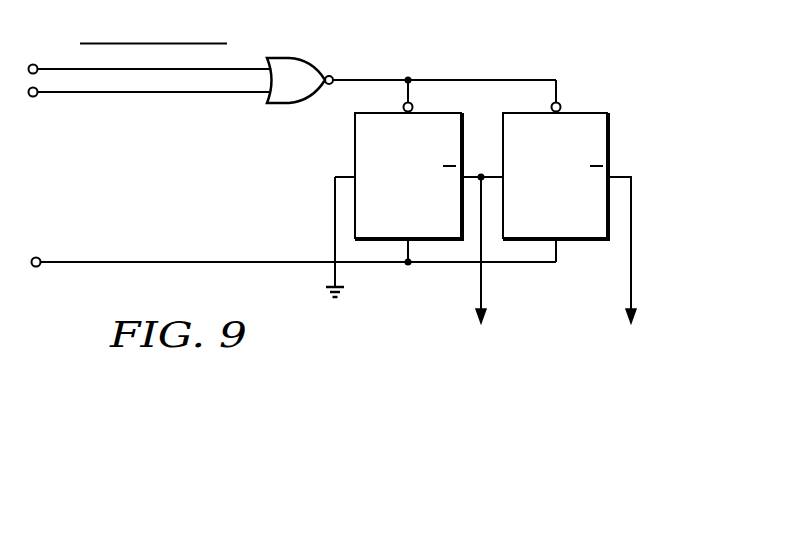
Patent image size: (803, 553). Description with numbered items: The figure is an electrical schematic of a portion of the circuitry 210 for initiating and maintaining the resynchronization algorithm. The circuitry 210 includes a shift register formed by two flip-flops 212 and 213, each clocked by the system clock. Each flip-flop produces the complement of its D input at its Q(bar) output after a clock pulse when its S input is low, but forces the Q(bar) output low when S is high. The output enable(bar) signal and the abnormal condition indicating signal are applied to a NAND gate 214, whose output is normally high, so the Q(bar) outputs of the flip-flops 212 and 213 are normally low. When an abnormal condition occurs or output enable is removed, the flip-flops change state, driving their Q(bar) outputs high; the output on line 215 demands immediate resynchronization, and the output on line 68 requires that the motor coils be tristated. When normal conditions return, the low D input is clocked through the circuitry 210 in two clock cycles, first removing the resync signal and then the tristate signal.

The circuitry 210 is at (632, 60).
The flip-flop 212 is at (355, 142).
The flip-flop 213 is at (608, 142).
The NAND gate 214 is at (281, 57).
The line 215 is at (481, 286).
The line 68 is at (631, 286).